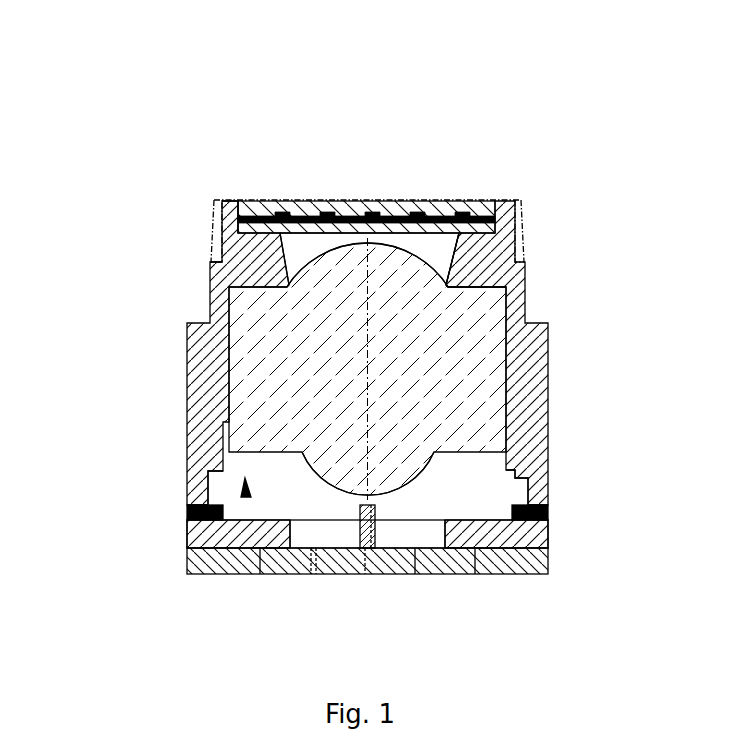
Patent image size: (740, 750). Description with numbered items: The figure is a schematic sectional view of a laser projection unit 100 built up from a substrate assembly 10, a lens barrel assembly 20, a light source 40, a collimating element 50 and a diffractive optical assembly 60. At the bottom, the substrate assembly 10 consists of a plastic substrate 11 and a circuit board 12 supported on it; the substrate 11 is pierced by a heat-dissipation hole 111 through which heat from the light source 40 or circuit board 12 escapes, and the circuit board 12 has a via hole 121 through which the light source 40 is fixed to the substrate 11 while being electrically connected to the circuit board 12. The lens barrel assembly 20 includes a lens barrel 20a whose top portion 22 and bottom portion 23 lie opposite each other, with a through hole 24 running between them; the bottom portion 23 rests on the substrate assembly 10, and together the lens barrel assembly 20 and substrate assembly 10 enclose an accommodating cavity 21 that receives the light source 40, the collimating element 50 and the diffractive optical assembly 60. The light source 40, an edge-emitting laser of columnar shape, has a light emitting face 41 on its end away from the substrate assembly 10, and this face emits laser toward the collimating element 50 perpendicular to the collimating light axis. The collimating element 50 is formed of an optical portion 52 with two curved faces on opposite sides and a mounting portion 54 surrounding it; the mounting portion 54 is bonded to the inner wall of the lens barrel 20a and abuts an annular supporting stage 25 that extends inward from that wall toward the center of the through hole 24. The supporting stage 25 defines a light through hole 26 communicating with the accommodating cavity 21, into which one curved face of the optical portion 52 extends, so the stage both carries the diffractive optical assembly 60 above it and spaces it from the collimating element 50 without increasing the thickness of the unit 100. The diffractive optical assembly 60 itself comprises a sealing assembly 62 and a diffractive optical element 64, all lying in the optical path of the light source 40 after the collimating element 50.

The laser projection unit 100 is at (198, 52).
The substrate assembly 10 is at (82, 517).
The substrate 11 is at (187, 568).
The heat-dissipation hole 111 is at (477, 572).
The circuit board 12 is at (187, 532).
The via hole 121 is at (307, 538).
The lens barrel assembly 20 is at (187, 402).
The lens barrel 20a is at (300, 353).
The accommodating cavity 21 is at (248, 502).
The top portion 22 is at (215, 220).
The bottom portion 23 is at (187, 486).
The through hole 24 is at (423, 496).
The supporting stage 25 is at (437, 256).
The light through hole 26 is at (497, 272).
The light source 40 is at (367, 552).
The light emitting face 41 is at (374, 506).
The collimating element 50 is at (643, 417).
The optical portion 52 is at (362, 494).
The mounting portion 54 is at (463, 415).
The diffractive optical assembly 60 is at (463, 178).
The sealing assembly 62 is at (307, 206).
The diffractive optical element 64 is at (402, 211).